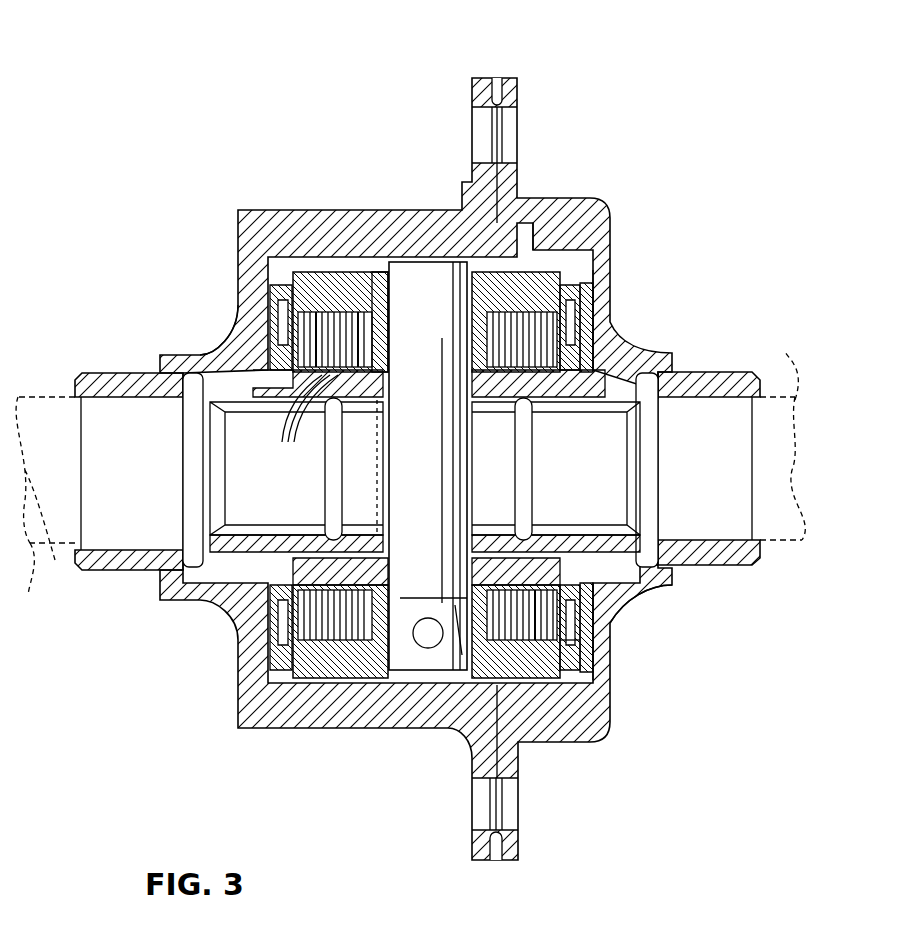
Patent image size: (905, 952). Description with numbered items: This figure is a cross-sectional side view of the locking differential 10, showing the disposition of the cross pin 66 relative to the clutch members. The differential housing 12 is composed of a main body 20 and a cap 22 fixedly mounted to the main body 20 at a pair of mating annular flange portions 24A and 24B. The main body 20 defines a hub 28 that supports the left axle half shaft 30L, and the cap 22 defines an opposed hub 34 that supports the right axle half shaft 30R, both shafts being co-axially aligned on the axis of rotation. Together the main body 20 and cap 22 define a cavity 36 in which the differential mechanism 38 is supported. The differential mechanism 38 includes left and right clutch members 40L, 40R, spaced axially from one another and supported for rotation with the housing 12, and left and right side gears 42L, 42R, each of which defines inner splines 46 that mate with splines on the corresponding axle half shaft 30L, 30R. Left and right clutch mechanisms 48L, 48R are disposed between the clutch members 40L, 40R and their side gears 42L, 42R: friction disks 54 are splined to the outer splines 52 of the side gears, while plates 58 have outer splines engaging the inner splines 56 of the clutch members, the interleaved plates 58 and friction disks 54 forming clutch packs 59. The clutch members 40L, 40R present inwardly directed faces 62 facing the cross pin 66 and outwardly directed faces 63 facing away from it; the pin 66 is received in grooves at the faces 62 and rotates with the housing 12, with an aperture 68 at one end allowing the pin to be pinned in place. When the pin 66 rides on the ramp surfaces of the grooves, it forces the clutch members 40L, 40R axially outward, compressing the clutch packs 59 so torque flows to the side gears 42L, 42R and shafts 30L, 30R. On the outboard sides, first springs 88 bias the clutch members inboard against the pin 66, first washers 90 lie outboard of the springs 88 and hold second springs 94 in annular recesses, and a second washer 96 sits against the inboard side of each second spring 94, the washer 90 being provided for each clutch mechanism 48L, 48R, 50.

The differential 10 is at (668, 89).
The differential housing 12 is at (416, 469).
The main body 20 is at (238, 238).
The cap 22 is at (610, 232).
The mating annular flange portion 24A is at (472, 85).
The mating annular flange portion 24B is at (515, 78).
The hub 28 is at (118, 360).
The left axle half shaft 30L is at (45, 504).
The right axle half shaft 30R is at (796, 436).
The opposed hub 34 is at (750, 560).
The cavity 36 is at (283, 673).
The differential mechanism 38 is at (597, 318).
The left clutch member 40L is at (280, 249).
The right clutch member 40R is at (597, 310).
The left side gear 42L is at (262, 352).
The right side gear 42R is at (663, 598).
The splines 46 is at (238, 530).
The left clutch mechanism 48L is at (313, 305).
The right clutch mechanism 48R is at (587, 671).
The clutch mechanism 50 is at (610, 580).
The splines 52 is at (345, 560).
The friction disks 54 is at (302, 420).
The splines 56 is at (279, 676).
The plates 58 is at (375, 315).
The clutch packs 59 is at (362, 318).
The inwardly directed faces 62 is at (433, 625).
The outwardly directed faces 63 is at (282, 283).
The cross pin 66 is at (419, 519).
The aperture 68 is at (425, 650).
The first springs 88 is at (565, 290).
The first washers 90 is at (592, 340).
The second springs 94 is at (585, 630).
The second washer 96 is at (585, 598).